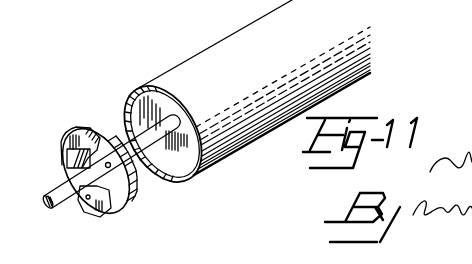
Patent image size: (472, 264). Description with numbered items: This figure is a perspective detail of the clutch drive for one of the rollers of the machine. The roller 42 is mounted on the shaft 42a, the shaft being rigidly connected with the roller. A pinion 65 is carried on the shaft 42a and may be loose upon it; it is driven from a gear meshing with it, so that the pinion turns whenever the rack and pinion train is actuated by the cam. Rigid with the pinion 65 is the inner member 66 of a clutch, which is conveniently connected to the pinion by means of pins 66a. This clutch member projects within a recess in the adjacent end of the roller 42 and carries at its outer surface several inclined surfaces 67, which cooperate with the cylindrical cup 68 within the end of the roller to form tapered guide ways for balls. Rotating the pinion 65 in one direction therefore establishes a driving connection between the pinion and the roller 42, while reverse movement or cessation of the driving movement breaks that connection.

The roller 42 is at (253, 87).
The shaft 42a is at (54, 207).
The pinion 65 is at (62, 165).
The inner member of clutch 66 is at (100, 130).
The pins 66a is at (87, 202).
The inclined surfaces 67 is at (133, 172).
The cylindrical cup 68 is at (136, 87).